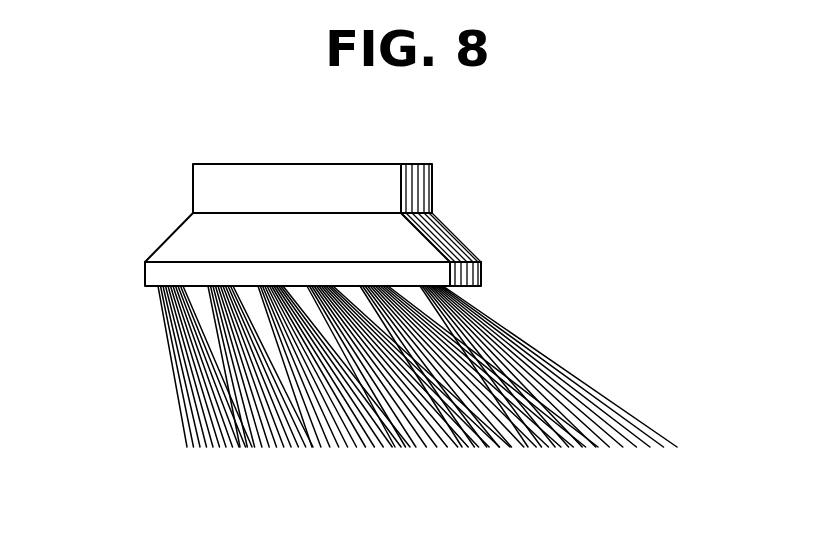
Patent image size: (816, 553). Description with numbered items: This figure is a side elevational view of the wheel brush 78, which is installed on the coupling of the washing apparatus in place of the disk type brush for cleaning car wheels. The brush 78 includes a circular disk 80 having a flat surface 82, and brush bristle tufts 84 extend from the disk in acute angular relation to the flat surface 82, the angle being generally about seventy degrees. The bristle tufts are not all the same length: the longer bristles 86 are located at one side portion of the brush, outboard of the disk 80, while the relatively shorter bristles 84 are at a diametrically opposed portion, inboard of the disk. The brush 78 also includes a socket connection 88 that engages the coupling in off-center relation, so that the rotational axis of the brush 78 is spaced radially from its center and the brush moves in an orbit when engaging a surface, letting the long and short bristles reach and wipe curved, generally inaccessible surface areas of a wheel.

The brush 78 is at (256, 179).
The circular disk 80 is at (420, 187).
The flat surface 82 is at (194, 287).
The brush bristle tufts 84 is at (513, 348).
The longer bristles 86 is at (597, 415).
The socket connection 88 is at (283, 163).